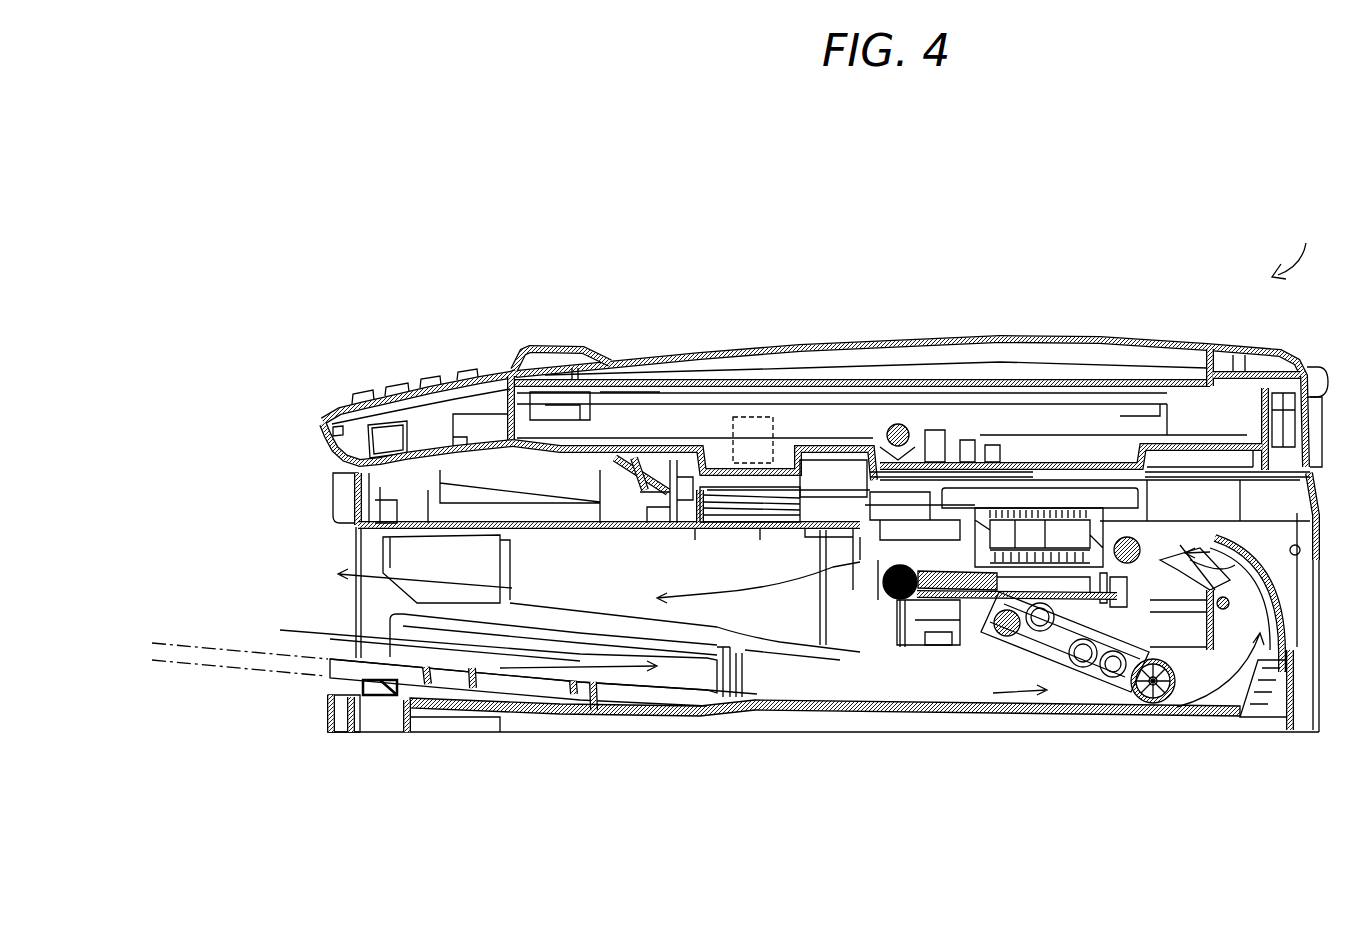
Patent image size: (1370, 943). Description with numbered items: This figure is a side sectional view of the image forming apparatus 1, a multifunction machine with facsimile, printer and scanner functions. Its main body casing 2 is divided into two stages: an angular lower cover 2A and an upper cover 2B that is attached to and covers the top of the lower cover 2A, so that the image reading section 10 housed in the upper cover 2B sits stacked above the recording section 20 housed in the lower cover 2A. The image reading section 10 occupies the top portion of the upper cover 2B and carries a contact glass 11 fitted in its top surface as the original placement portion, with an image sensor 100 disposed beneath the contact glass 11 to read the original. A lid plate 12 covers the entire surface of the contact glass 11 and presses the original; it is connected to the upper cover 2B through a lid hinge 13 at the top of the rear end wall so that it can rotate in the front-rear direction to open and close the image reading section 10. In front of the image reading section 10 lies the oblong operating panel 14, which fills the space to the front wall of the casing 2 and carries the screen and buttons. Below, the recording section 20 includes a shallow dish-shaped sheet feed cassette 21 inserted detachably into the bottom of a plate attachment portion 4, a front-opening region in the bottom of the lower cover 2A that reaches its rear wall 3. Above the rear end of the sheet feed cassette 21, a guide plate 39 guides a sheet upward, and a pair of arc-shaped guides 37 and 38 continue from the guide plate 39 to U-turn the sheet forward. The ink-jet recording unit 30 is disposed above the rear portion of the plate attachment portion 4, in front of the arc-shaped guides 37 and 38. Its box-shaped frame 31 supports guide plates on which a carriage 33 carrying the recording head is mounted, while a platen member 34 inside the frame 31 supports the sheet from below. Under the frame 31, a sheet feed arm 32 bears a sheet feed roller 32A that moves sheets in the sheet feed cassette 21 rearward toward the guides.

The image forming apparatus 1 is at (1295, 243).
The main body casing 2 is at (252, 455).
The lower cover 2A is at (343, 507).
The upper cover 2B is at (335, 453).
The rear wall 3 is at (1315, 492).
The plate attachment portion 4 is at (355, 548).
The image reading section 10 is at (1167, 402).
The contact glass 11 is at (1093, 386).
The lid plate 12 is at (1057, 342).
The lid hinge 13 is at (1312, 375).
The operating panel 14 is at (430, 413).
The recording section 20 is at (786, 790).
The sheet feed cassette 21 is at (705, 718).
The ink-jet recording unit 30 is at (903, 600).
The frame 31 is at (943, 647).
The sheet feed arm 32 is at (1053, 653).
The sheet feed roller 32A is at (1160, 705).
The carriage 33 is at (1023, 537).
The platen member 34 is at (930, 603).
The arc-shaped guide 37 is at (1277, 607).
The arc-shaped guide 38 is at (1233, 583).
The guide plate 39 is at (1260, 681).
The image sensor 100 is at (837, 423).